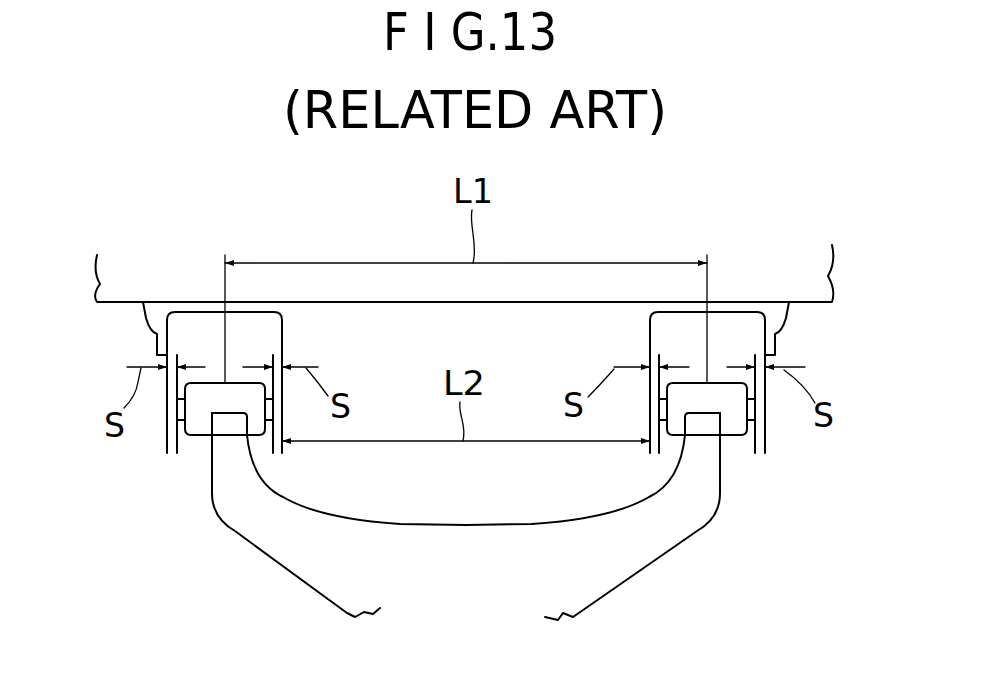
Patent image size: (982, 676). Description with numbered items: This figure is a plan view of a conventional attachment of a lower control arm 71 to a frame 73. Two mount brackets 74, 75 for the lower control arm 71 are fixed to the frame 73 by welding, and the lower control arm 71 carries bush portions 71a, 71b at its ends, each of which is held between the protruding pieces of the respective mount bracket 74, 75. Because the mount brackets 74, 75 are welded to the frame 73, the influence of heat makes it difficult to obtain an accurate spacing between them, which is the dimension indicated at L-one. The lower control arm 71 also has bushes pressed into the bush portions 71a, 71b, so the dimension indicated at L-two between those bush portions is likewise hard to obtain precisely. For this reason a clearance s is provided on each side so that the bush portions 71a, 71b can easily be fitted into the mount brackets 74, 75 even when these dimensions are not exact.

The lower control arm 71 is at (293, 558).
The bush portion 71a is at (202, 412).
The bush portion 71b is at (725, 407).
The frame 73 is at (777, 286).
The mount bracket 74 is at (152, 313).
The mount bracket 75 is at (780, 314).